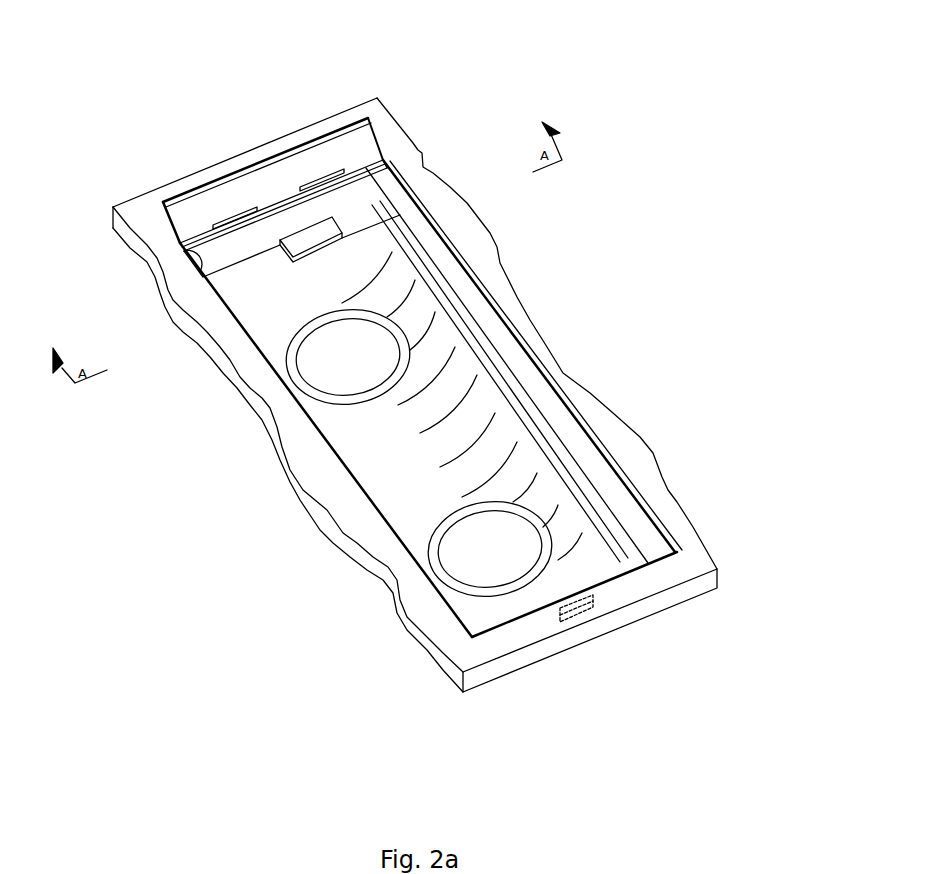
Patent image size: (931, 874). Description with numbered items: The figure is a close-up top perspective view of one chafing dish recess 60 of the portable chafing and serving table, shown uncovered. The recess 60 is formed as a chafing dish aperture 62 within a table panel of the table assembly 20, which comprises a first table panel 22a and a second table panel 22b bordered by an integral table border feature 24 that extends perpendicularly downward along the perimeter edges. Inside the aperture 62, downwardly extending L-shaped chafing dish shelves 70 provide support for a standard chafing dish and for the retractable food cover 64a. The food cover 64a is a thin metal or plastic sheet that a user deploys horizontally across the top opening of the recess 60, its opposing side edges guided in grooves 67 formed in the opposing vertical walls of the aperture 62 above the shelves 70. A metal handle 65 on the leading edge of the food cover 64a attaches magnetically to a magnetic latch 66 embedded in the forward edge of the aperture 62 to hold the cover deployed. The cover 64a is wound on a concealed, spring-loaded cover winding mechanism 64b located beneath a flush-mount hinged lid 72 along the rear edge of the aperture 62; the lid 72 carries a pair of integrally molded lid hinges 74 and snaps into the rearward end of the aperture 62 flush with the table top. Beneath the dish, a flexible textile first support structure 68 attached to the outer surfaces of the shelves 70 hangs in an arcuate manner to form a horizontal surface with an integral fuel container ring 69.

The table assembly 20 is at (668, 496).
The first table panel 22a is at (140, 208).
The second table panel 22b is at (445, 395).
The table border feature 24 is at (660, 600).
The chafing dish recess 60 is at (237, 137).
The chafing dish aperture 62 is at (433, 590).
The food cover 64a is at (230, 249).
The cover winding mechanism 64b is at (230, 249).
The metal handle 65 is at (293, 262).
The magnetic latch 66 is at (576, 617).
The grooves 67 is at (460, 275).
The first support structure 68 is at (301, 441).
The fuel container ring 69 is at (305, 402).
The chafing dish shelf 70 is at (390, 215).
The lid 72 is at (305, 143).
The lid hinges 74 is at (303, 188).